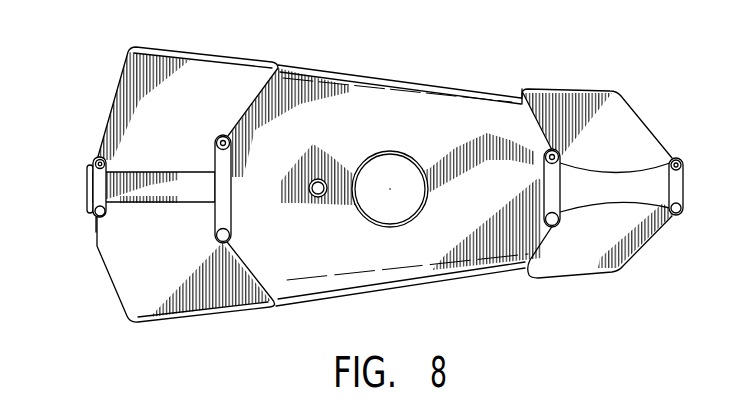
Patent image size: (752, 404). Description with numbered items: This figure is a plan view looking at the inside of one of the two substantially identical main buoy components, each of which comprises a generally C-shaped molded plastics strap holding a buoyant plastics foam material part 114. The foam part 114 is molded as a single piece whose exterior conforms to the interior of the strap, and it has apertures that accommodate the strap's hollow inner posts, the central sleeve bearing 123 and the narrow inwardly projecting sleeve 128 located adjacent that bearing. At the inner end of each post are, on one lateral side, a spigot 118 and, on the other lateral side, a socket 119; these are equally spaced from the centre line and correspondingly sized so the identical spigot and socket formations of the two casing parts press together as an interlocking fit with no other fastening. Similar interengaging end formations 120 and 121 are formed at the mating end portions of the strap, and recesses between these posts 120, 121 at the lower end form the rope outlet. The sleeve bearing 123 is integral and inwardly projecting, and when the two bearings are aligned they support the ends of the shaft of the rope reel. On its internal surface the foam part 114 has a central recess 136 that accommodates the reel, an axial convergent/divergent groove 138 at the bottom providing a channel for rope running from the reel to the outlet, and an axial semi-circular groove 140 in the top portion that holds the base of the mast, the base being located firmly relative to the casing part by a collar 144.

The buoyant plastics foam material part 114 is at (404, 126).
The spigot 118 is at (222, 136).
The socket 119 is at (231, 232).
The interengaging end formation 120 is at (96, 160).
The interengaging end formation 121 is at (96, 216).
The sleeve bearing 123 is at (417, 223).
The narrow inwardly projecting sleeve 128 is at (317, 198).
The central recess 136 is at (525, 118).
The axial convergent/divergent groove 138 is at (594, 184).
The axial semi-circular groove 140 is at (152, 184).
The collar 144 is at (89, 190).